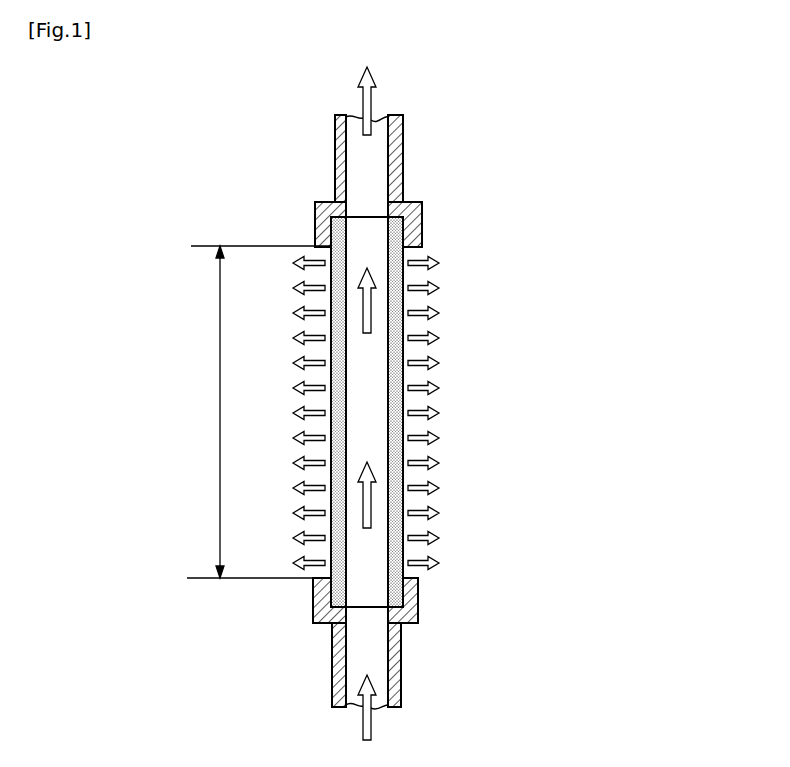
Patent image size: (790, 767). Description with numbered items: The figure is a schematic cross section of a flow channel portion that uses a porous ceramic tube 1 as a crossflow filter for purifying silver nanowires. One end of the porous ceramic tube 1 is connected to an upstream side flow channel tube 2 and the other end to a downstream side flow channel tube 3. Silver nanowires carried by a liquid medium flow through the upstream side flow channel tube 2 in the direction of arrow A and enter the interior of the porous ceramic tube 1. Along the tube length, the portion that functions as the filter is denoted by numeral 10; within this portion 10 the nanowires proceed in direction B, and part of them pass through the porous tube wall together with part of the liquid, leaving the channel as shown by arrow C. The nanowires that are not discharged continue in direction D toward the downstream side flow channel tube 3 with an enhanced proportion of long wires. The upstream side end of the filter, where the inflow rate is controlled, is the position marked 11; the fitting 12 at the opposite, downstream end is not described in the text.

The porous ceramic tube 1 is at (405, 353).
The upstream side flow channel tube 2 is at (400, 658).
The downstream side flow channel tube 3 is at (402, 155).
The portion functioning as a filter 10 is at (257, 412).
The upstream side end of the filter 11 is at (312, 587).
The upper fitting 12 is at (313, 240).